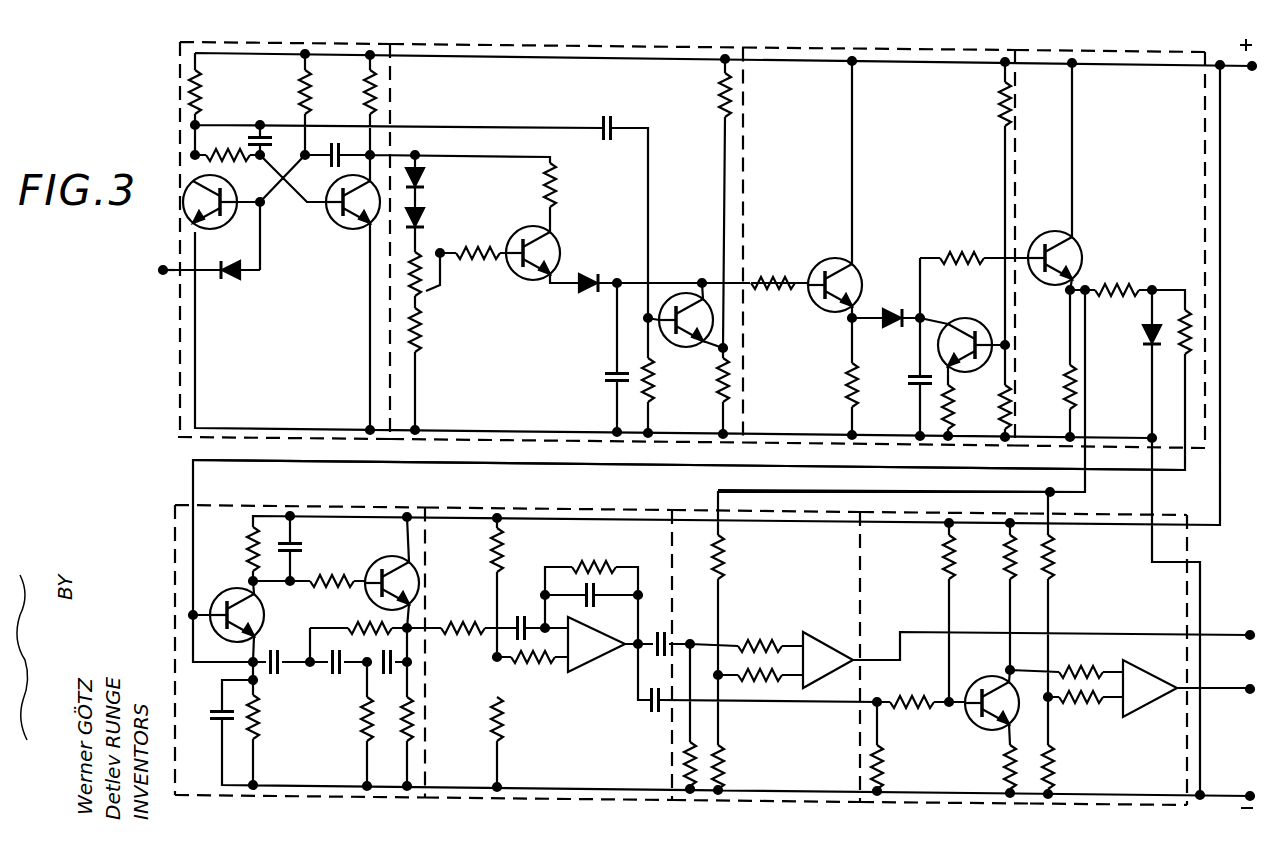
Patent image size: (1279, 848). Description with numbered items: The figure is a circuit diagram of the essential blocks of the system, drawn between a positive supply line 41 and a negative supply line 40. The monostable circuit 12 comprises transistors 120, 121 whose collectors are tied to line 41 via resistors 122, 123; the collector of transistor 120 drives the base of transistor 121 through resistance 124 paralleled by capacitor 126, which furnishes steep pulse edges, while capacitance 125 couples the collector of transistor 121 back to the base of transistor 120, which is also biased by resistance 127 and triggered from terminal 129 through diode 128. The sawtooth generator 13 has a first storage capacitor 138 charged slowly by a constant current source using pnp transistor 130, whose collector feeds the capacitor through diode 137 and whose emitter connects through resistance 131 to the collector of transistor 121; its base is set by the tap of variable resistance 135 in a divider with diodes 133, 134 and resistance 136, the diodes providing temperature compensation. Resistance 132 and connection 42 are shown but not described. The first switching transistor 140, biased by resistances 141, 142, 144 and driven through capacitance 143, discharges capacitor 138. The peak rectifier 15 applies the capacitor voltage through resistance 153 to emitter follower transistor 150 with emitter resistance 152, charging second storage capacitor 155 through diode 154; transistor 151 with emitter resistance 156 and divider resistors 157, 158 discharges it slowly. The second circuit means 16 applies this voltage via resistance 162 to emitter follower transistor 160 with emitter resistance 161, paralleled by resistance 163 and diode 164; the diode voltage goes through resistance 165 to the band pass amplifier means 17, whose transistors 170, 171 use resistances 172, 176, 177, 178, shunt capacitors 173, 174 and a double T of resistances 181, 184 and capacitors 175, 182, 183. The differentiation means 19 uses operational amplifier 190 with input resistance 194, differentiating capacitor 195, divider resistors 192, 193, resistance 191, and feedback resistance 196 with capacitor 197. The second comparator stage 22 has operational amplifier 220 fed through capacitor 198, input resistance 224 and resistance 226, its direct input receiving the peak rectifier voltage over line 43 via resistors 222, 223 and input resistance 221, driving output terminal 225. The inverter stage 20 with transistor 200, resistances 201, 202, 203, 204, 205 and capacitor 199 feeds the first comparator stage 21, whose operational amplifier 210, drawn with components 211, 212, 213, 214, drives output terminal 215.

The monostable circuit 12 is at (290, 42).
The sawtooth generator 13 is at (512, 44).
The peak rectifier 15 is at (880, 50).
The second circuit means 16 is at (1116, 52).
The band pass amplifier means 17 is at (311, 798).
The differentiation means 19 is at (576, 800).
The inverter stage 20 is at (931, 803).
The first comparator stage 21 is at (1108, 804).
The second comparator stage 22 is at (766, 802).
The negative supply line 40 is at (1221, 794).
The positive supply line 41 is at (1244, 70).
The connecting line 42 is at (1167, 474).
The line 43 is at (717, 490).
The transistor 120 is at (235, 225).
The transistor 121 is at (343, 226).
The resistor 122 is at (182, 85).
The resistor 123 is at (376, 88).
The resistance 124 is at (192, 153).
The capacitance 125 is at (336, 144).
The capacitor 126 is at (258, 136).
The resistance 127 is at (299, 88).
The diode 128 is at (240, 283).
The terminal 129 is at (162, 269).
The transistor 130 is at (566, 245).
The resistance 131 is at (555, 193).
The resistor 132 is at (476, 260).
The diode 133 is at (425, 180).
The diode 134 is at (425, 212).
The variable resistance 135 is at (420, 292).
The resistance 136 is at (421, 338).
The diode 137 is at (589, 291).
The storage capacitor 138 is at (602, 379).
The first switching transistor 140 is at (689, 290).
The resistance 141 is at (714, 398).
The resistance 142 is at (716, 100).
The capacitance 143 is at (604, 118).
The resistance 144 is at (653, 370).
The transistor 150 is at (829, 258).
The transistor 151 is at (962, 320).
The resistance 152 is at (844, 394).
The resistance 153 is at (770, 290).
The diode 154 is at (896, 307).
The second storage capacitor 155 is at (908, 374).
The emitter resistance 156 is at (938, 412).
The resistor 157 is at (1011, 420).
The resistor 158 is at (994, 115).
The transistor 160 is at (1051, 233).
The emitter resistance 161 is at (1062, 366).
The resistance 162 is at (962, 247).
The resistance 163 is at (1122, 286).
The diode 164 is at (1144, 346).
The resistance 165 is at (1198, 324).
The first transistor 170 is at (228, 592).
The second transistor 171 is at (410, 572).
The emitter resistance 172 is at (259, 727).
The capacitor 173 is at (300, 538).
The capacitor 174 is at (217, 720).
The capacitor 175 is at (282, 650).
The resistance 176 is at (335, 576).
The collector resistance 177 is at (247, 542).
The emitter resistance 178 is at (414, 716).
The resistance 181 is at (362, 720).
The capacitor 182 is at (330, 668).
The capacitor 183 is at (408, 664).
The resistance 184 is at (365, 624).
The operational amplifier 190 is at (595, 668).
The resistance 191 is at (541, 667).
The resistor 192 is at (504, 724).
The resistor 193 is at (504, 543).
The resistance 194 is at (462, 626).
The differentiating capacitor 195 is at (520, 620).
The resistance 196 is at (599, 560).
The capacitor 197 is at (595, 600).
The capacitor 198 is at (676, 632).
The capacitor 199 is at (648, 710).
The transistor 200 is at (987, 676).
The emitter resistance 201 is at (1001, 766).
The collector resistance 202 is at (1002, 578).
The resistance 203 is at (939, 560).
The resistance 204 is at (910, 698).
The third resistance 205 is at (883, 756).
The operational amplifier 210 is at (1149, 706).
The resistor 211 is at (1096, 702).
The resistor 212 is at (1059, 770).
The resistor 213 is at (1058, 560).
The resistor 214 is at (1070, 672).
The output terminal 215 is at (1244, 712).
The operational amplifier 220 is at (828, 642).
The input resistance 221 is at (768, 685).
The resistor 222 is at (724, 766).
The resistor 223 is at (731, 548).
The input resistance 224 is at (760, 636).
The output terminal 225 is at (1244, 632).
The resistance 226 is at (679, 766).